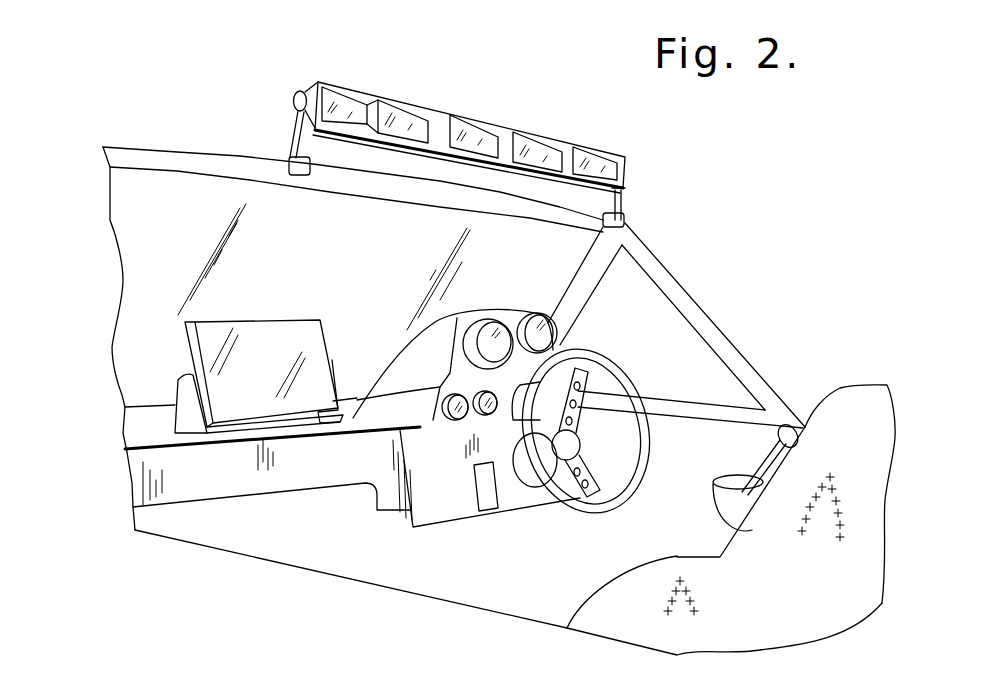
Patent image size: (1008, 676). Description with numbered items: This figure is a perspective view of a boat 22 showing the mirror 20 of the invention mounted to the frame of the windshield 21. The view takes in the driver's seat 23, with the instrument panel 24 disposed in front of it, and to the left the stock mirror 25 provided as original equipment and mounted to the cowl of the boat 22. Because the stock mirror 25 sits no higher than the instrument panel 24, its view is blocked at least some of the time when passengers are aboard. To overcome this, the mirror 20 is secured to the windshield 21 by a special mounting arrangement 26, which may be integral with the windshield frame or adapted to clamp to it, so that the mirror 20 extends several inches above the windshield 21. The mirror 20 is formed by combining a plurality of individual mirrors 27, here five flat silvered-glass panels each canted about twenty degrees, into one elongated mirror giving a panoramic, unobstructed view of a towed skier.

The mirror 20 is at (478, 118).
The windshield 21 is at (120, 219).
The boat 22 is at (779, 332).
The driver's seat 23 is at (846, 393).
The instrument panel 24 is at (470, 312).
The stock mirror 25 is at (288, 318).
The mounting arrangement 26 is at (300, 128).
The individual mirrors 27 is at (392, 104).